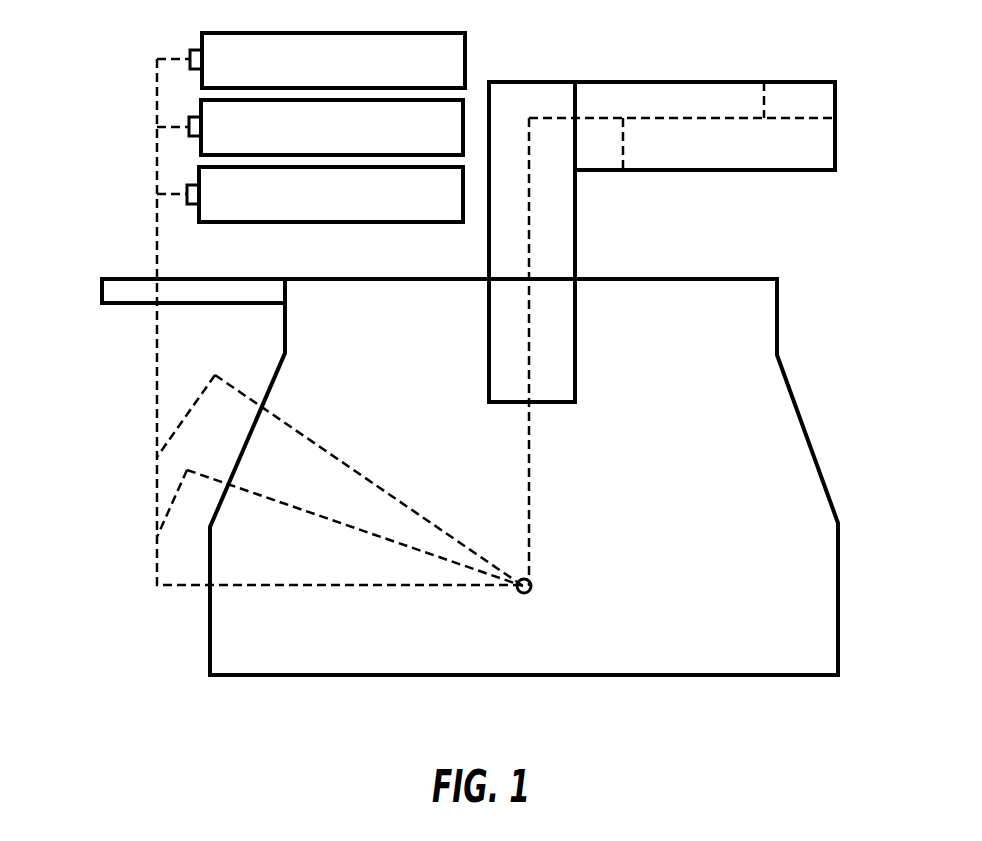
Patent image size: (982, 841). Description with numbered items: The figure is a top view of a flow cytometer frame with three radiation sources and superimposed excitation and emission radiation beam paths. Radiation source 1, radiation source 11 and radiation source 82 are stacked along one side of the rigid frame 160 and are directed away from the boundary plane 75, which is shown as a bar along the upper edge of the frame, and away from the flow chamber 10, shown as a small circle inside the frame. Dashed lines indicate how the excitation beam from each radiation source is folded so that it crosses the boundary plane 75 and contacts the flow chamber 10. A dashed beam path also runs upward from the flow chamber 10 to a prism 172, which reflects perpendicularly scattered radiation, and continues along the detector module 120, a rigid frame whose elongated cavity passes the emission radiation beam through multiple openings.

The flow chamber 10 is at (528, 579).
The boundary plane 75 is at (102, 277).
The rigid frame 160 is at (790, 430).
The prism 172 is at (527, 90).
The detector module 120 is at (728, 82).
The radiation source 82 is at (355, 75).
The radiation source 1 is at (343, 142).
The radiation source 11 is at (352, 210).